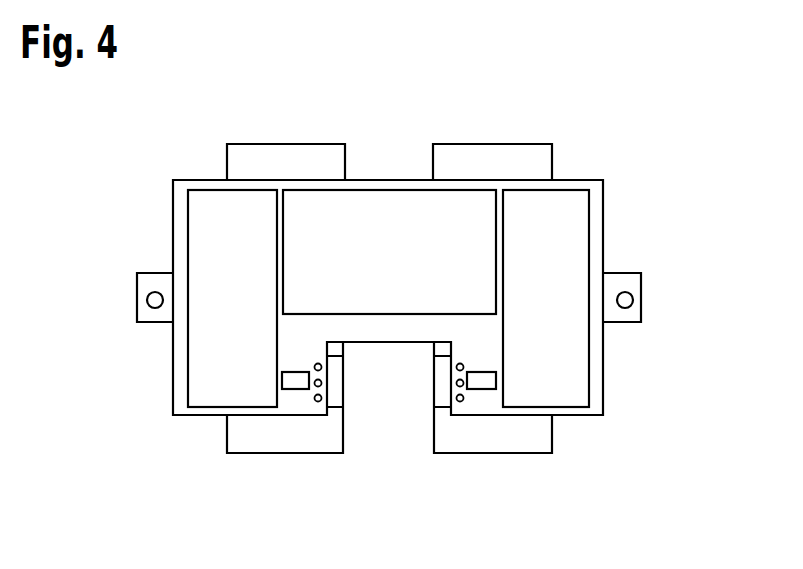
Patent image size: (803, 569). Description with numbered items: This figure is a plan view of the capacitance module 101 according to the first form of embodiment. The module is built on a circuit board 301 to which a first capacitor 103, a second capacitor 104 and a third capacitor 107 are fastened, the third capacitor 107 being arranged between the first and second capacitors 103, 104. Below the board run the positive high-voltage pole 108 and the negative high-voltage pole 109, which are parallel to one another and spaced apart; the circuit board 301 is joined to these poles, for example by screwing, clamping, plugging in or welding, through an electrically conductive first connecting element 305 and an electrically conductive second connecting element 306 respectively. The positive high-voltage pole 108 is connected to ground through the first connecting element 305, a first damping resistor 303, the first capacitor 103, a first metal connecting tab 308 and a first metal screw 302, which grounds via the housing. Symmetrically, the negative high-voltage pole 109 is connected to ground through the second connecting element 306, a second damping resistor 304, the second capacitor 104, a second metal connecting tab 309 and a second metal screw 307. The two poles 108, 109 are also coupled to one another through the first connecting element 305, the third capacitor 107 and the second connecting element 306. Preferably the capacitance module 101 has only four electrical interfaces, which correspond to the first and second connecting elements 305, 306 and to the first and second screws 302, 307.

The capacitance module 101 is at (664, 180).
The first capacitor 103 is at (203, 215).
The second capacitor 104 is at (575, 205).
The third capacitor 107 is at (390, 210).
The positive high-voltage pole 108 is at (273, 443).
The negative high-voltage pole 109 is at (497, 443).
The circuit board 301 is at (181, 403).
The first metal screw 302 is at (147, 300).
The first damping resistor 303 is at (296, 380).
The second damping resistor 304 is at (487, 382).
The first connecting element 305 is at (337, 385).
The second connecting element 306 is at (445, 382).
The second metal screw 307 is at (633, 300).
The first metal connecting tab 308 is at (152, 313).
The second metal connecting tab 309 is at (632, 313).